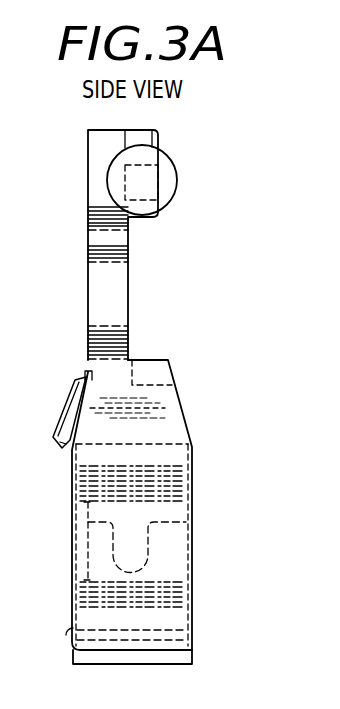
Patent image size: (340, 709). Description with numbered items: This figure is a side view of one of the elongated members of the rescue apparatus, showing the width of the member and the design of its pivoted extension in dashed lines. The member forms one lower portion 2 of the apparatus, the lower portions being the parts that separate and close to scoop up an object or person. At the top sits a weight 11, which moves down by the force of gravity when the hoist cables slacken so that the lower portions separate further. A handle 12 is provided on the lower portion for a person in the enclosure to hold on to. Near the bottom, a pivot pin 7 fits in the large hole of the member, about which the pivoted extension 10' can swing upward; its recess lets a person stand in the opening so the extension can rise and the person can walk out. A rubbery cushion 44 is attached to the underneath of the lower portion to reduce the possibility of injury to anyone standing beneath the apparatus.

The weight 11 is at (158, 142).
The lower portion 2 is at (192, 566).
The pivoted extension 10' is at (176, 472).
The handle 12 is at (65, 407).
The pivot pin 7 is at (100, 630).
The rubbery cushion 44 is at (192, 661).